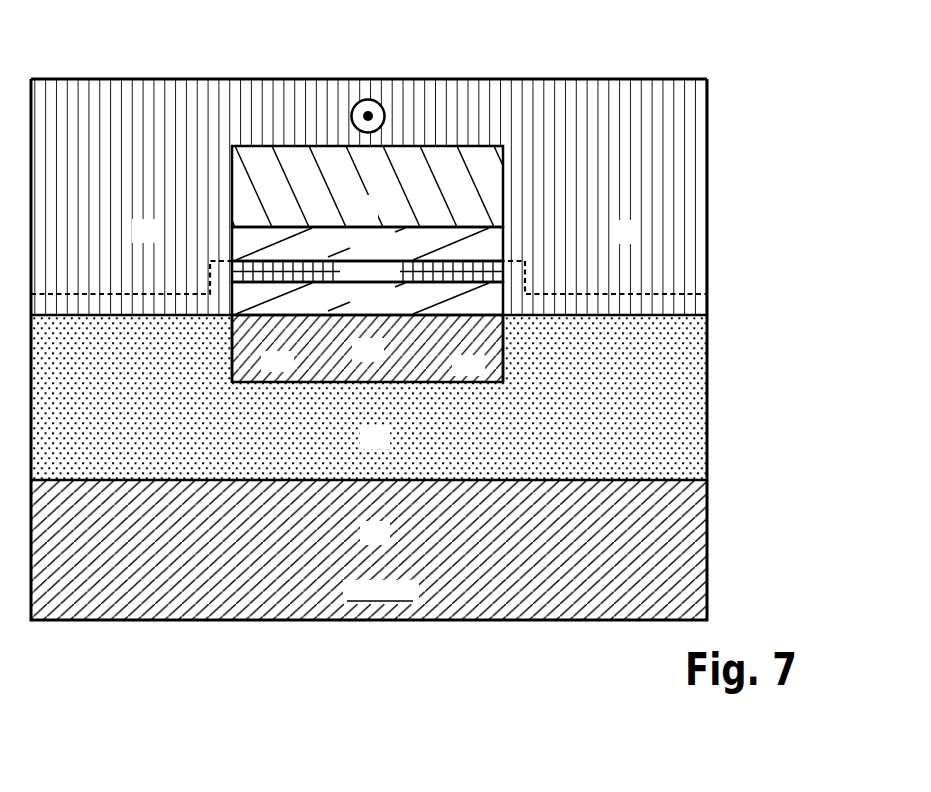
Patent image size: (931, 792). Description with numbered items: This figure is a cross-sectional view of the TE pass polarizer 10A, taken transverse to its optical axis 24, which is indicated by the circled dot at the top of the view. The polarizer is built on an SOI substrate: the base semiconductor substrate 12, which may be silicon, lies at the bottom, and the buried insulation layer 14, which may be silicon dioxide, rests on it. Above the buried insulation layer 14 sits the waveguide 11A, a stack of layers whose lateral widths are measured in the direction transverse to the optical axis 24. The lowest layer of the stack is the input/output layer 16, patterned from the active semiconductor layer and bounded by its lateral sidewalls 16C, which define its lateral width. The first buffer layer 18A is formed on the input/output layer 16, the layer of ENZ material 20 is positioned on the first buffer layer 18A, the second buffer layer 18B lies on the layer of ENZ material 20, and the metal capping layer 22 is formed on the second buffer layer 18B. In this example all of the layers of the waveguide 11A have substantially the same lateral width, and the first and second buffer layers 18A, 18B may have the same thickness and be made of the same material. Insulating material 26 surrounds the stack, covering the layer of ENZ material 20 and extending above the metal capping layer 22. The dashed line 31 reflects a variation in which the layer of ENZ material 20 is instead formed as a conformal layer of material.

The TE pass polarizer 10A is at (61, 58).
The waveguide 11A is at (551, 134).
The base semiconductor substrate 12 is at (366, 542).
The buried insulation layer 14 is at (366, 446).
The input/output layer 16 is at (359, 359).
The lateral sidewalls 16C is at (235, 343).
The first buffer layer 18A is at (355, 307).
The second buffer layer 18B is at (355, 251).
The layer of ENZ material 20 is at (359, 280).
The metal capping layer 22 is at (354, 215).
The optical axis 24 is at (394, 105).
The insulating material 26 is at (136, 240).
The dashed line 31 is at (571, 293).